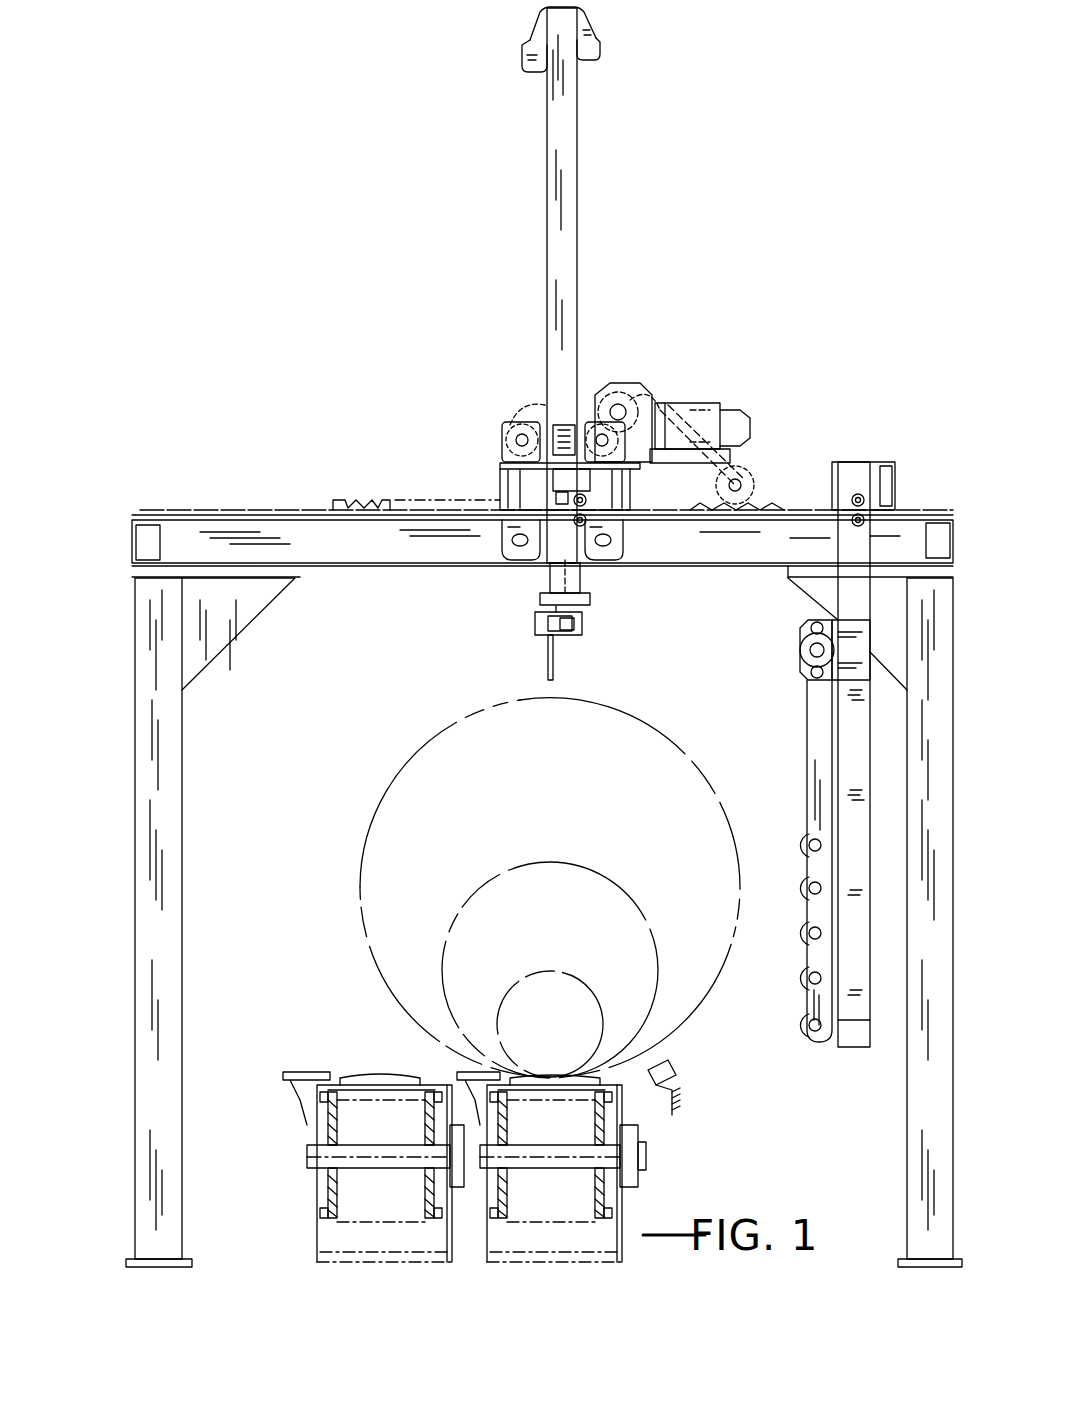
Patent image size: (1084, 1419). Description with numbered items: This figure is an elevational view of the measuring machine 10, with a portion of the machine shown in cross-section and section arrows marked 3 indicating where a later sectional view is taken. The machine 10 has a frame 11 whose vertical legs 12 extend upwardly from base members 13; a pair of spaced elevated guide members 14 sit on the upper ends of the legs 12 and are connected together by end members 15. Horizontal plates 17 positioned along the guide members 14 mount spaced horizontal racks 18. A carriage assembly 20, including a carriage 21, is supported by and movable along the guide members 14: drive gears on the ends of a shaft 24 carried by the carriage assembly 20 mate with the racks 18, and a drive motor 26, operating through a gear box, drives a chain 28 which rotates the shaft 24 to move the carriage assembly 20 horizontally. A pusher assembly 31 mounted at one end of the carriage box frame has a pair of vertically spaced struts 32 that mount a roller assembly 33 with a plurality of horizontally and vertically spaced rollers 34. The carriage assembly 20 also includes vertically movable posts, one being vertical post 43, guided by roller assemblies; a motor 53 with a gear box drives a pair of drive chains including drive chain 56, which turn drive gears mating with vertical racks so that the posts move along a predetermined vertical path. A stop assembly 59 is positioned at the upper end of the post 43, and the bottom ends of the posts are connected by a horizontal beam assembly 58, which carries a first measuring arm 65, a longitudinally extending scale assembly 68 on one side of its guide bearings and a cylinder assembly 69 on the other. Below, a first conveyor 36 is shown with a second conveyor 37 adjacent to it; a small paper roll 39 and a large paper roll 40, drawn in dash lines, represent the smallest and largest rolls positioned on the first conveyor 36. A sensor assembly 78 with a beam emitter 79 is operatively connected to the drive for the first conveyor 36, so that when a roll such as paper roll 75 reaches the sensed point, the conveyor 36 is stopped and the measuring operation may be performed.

The measuring machine 10 is at (346, 590).
The frame 11 is at (186, 785).
The vertical legs 12 is at (182, 940).
The base members 13 is at (186, 1257).
The spaced elevated guide members 14 is at (385, 570).
The end members 15 is at (160, 540).
The horizontal plates 17 is at (245, 512).
The spaced horizontal racks 18 is at (350, 505).
The carriage assembly 20 is at (500, 430).
The carriage 21 is at (620, 555).
The shaft 24 is at (735, 505).
The drive motor 26 is at (748, 412).
The chain 28 is at (588, 408).
The pusher assembly 31 is at (870, 850).
The struts 32 is at (870, 770).
The roller assembly 33 is at (807, 745).
The rollers 34 is at (805, 842).
The first conveyor 36 is at (622, 1195).
The second conveyor 37 is at (317, 1130).
The small paper roll 39 is at (545, 970).
The large paper roll 40 is at (682, 750).
The vertical post 43 is at (577, 172).
The motor 53 is at (698, 403).
The drive chain 56 is at (683, 403).
The horizontal beam assembly 58 is at (548, 575).
The stop assembly 59 is at (600, 45).
The first measuring arm 65 is at (548, 660).
The scale assembly 68 is at (535, 623).
The cylinder assembly 69 is at (615, 600).
The paper roll 75 is at (462, 910).
The sensor assembly 78 is at (660, 1098).
The beam emitter 79 is at (664, 1062).
The section line of FIG. 3 is at (633, 480).